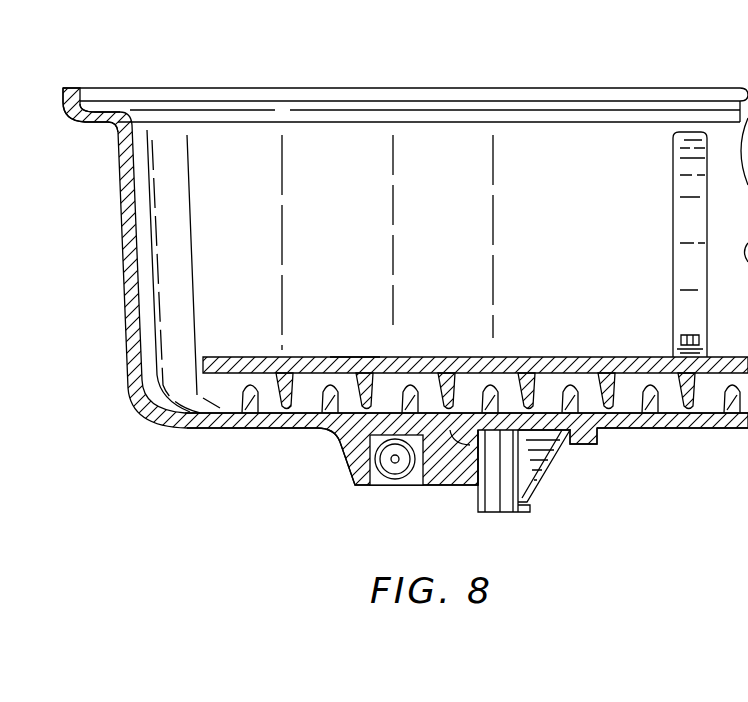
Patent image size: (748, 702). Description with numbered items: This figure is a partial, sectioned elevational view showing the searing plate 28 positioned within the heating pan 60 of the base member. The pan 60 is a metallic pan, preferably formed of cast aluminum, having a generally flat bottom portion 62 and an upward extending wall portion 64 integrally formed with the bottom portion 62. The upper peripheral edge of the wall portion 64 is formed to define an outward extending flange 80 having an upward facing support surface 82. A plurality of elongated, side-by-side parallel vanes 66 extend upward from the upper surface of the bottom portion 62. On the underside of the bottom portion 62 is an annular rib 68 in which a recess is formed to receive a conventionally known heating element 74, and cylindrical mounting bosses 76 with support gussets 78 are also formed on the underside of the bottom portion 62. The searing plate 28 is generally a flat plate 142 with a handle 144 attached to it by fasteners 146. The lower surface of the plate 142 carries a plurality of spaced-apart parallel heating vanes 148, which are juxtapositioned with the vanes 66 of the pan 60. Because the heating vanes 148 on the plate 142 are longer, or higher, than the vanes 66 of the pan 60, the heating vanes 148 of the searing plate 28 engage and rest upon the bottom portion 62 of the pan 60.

The searing plate 28 is at (512, 357).
The pan 60 is at (145, 410).
The bottom portion 62 is at (285, 430).
The wall portion 64 is at (127, 243).
The vanes 66 is at (243, 392).
The annular rib 68 is at (352, 472).
The heating element 74 is at (402, 487).
The mounting bosses 76 is at (507, 495).
The support gussets 78 is at (538, 455).
The flange 80 is at (98, 120).
The support surface 82 is at (95, 93).
The plate 142 is at (357, 328).
The handle 144 is at (673, 218).
The fasteners 146 is at (688, 335).
The heating vanes 148 is at (290, 400).